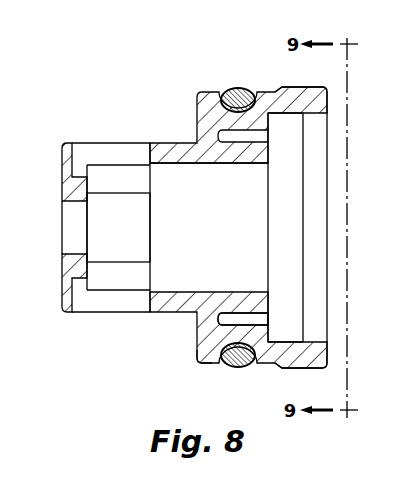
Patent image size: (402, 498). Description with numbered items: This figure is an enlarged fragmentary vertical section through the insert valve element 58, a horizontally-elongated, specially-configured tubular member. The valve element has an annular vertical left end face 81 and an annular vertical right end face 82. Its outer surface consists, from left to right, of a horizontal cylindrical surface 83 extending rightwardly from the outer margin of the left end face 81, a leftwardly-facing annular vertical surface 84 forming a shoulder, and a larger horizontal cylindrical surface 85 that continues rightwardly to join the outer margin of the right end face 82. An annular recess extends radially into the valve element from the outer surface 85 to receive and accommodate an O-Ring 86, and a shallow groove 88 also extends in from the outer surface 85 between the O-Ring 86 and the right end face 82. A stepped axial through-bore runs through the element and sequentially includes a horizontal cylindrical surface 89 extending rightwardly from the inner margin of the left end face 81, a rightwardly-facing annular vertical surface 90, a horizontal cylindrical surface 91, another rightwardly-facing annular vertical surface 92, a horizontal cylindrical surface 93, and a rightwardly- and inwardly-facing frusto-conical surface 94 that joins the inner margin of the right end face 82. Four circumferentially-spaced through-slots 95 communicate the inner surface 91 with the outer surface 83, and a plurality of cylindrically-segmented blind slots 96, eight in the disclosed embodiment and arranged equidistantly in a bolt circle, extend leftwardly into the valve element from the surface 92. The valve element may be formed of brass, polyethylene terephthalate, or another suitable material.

The valve element 58 is at (175, 80).
The left end face 81 is at (58, 146).
The right end face 82 is at (329, 130).
The horizontal cylindrical surface 83 is at (157, 141).
The leftwardly-facing annular vertical surface 84 is at (193, 338).
The horizontal cylindrical surface 85 is at (203, 364).
The O-Ring 86 is at (243, 87).
The shallow groove 88 is at (287, 90).
The horizontal cylindrical surface 89 is at (63, 256).
The rightwardly-facing annular vertical surface 90 is at (89, 199).
The horizontal cylindrical surface 91 is at (176, 165).
The rightwardly-facing annular vertical surface 92 is at (270, 155).
The horizontal cylindrical surface 93 is at (297, 332).
The frusto-conical surface 94 is at (321, 340).
The through-slots 95 is at (133, 175).
The blind slots 96 is at (256, 292).